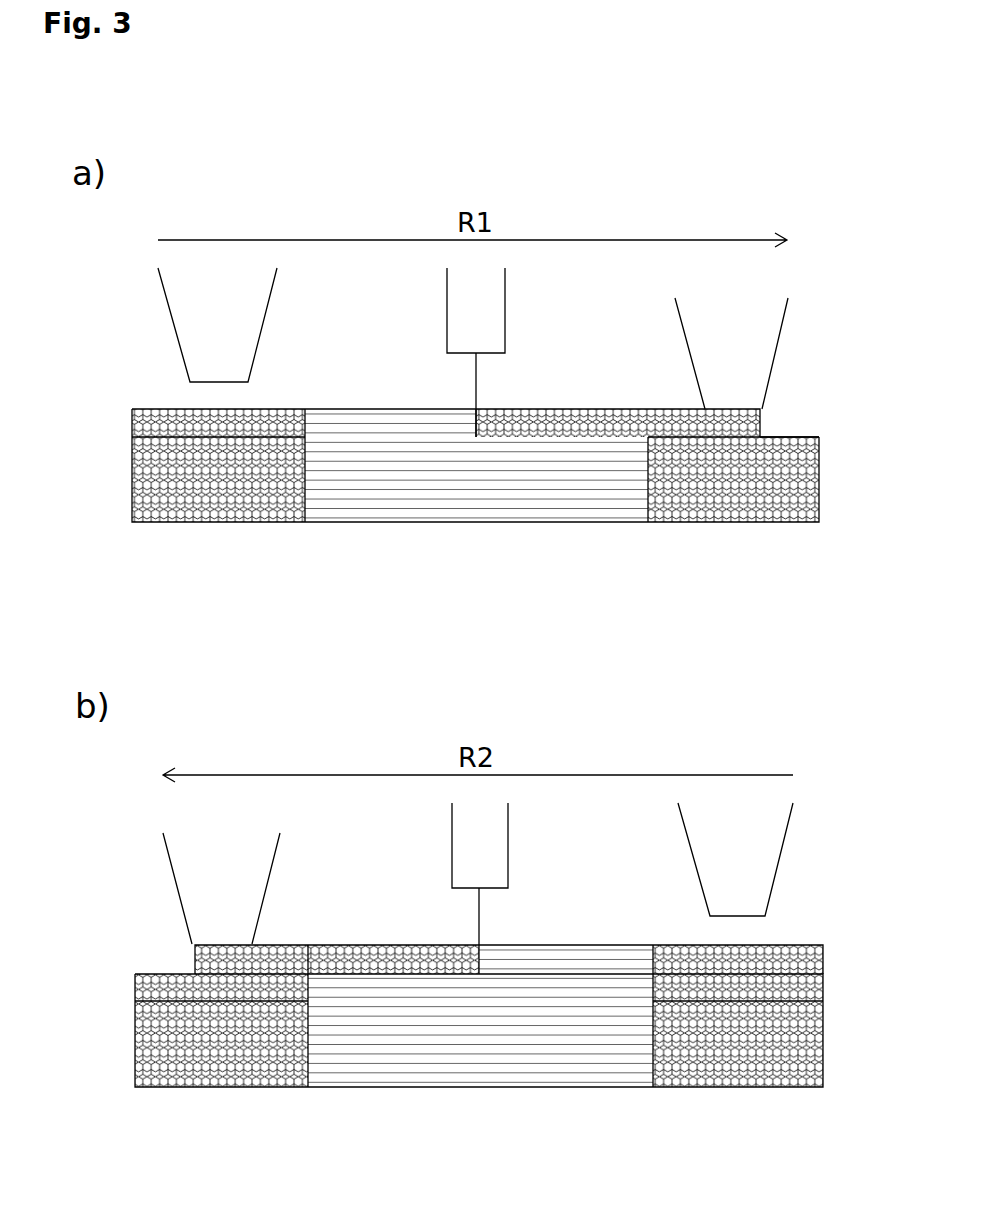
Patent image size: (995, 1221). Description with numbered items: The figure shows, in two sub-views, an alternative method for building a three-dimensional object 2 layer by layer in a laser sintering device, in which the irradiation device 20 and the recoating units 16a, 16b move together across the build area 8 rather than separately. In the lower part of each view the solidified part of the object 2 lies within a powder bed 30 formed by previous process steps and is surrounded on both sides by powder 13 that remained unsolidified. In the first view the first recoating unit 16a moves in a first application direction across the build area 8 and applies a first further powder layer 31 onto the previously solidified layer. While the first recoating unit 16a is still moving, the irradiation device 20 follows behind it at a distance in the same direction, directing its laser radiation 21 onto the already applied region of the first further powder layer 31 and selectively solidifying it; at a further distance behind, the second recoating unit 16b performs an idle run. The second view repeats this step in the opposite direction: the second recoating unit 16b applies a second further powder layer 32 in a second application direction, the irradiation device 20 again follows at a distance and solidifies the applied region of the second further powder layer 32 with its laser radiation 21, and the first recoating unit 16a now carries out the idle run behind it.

The object 2 is at (463, 493).
The powder 13 is at (185, 513).
The powder bed 30 is at (153, 465).
The first further powder layer 31 is at (522, 409).
The second further powder layer 32 is at (270, 945).
The build area 8 is at (796, 428).
The irradiation device 20 is at (477, 578).
The laser radiation 21 is at (474, 393).
The first recoating unit 16a is at (734, 607).
The second recoating unit 16b is at (219, 606).